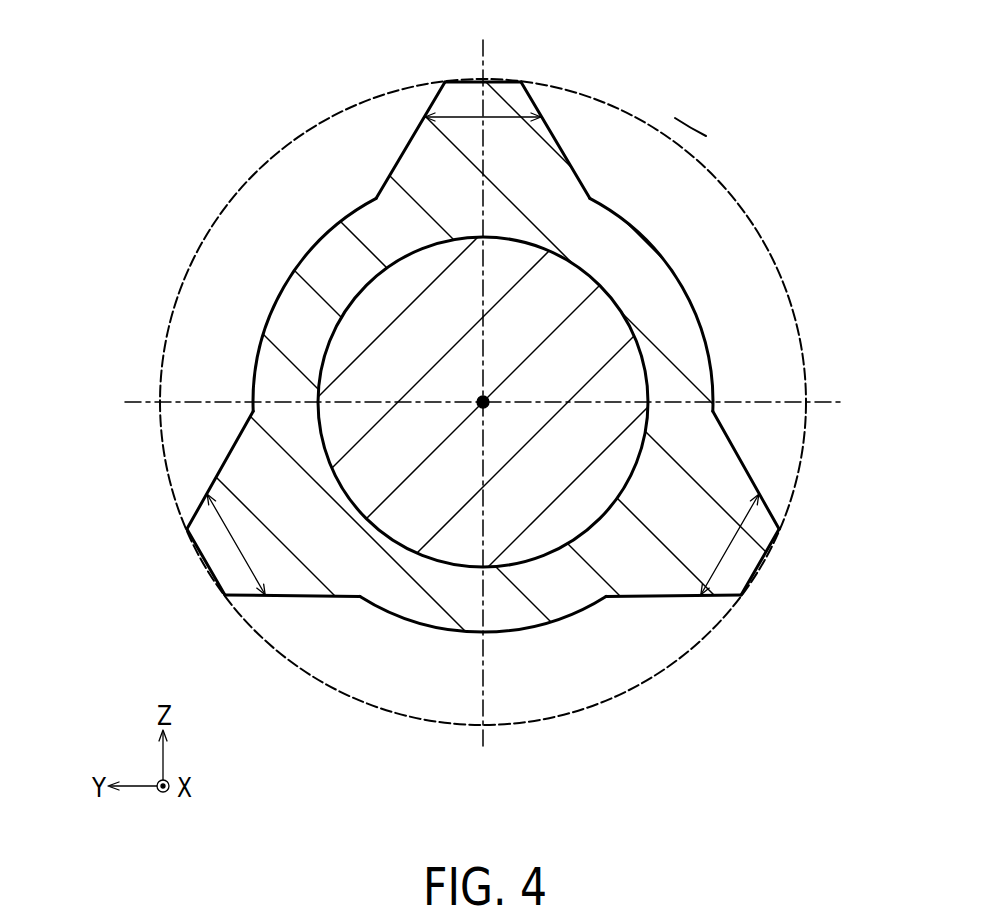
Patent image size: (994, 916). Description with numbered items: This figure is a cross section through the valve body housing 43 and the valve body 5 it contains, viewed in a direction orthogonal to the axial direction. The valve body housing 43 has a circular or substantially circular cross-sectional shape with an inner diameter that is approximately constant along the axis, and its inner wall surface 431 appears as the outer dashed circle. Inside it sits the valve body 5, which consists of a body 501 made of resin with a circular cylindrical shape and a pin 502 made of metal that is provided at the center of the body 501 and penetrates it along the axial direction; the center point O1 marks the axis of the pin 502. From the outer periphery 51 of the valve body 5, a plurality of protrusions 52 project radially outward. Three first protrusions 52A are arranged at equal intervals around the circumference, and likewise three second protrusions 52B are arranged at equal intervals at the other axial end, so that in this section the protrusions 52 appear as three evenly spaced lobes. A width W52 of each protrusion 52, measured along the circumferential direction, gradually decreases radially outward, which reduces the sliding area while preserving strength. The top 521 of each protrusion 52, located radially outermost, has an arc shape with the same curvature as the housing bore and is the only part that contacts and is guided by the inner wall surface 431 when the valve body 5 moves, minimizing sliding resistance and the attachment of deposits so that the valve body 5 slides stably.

The valve body 5 is at (490, 327).
The outer periphery 51 is at (490, 327).
The body 501 is at (328, 283).
The pin 502 is at (383, 365).
The protrusion 52 is at (490, 327).
The first protrusion 52A is at (502, 339).
The second protrusion 52B is at (510, 98).
The top 521 is at (494, 83).
The width W52 is at (466, 117).
The valve body housing 43 is at (630, 137).
The inner wall surface 431 is at (690, 152).
The rotation center axis O1 is at (490, 400).